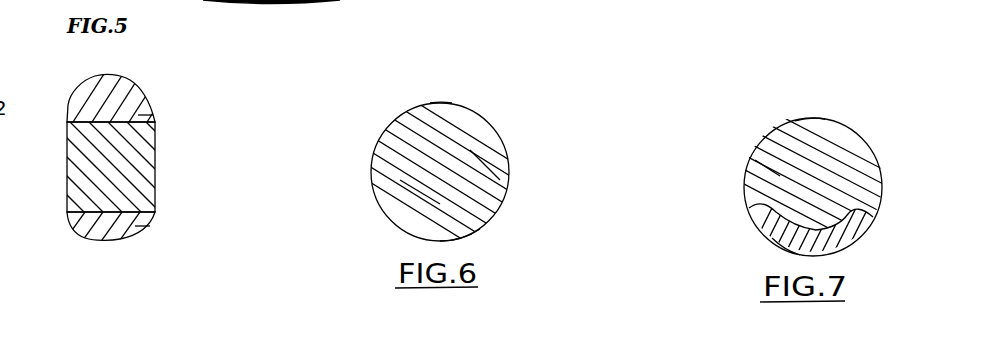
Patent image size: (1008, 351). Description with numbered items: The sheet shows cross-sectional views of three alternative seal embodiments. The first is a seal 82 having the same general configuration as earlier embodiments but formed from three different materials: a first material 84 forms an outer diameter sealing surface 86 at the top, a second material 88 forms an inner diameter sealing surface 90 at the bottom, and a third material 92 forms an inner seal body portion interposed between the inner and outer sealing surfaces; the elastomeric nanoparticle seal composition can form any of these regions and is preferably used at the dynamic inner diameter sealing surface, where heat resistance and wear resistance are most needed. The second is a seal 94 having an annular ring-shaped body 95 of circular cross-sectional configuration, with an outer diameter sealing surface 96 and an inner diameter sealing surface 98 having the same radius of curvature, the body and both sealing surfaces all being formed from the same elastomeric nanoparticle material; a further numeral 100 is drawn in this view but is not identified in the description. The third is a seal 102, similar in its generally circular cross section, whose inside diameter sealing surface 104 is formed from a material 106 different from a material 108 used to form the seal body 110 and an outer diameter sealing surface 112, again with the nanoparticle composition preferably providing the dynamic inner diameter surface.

In FIG. 5, the seal 82 is at (130, 151).
In FIG. 5, the first material 84 is at (146, 113).
In FIG. 5, the outer diameter sealing surface 86 is at (137, 82).
In FIG. 5, the second material 88 is at (137, 225).
In FIG. 5, the inner diameter sealing surface 90 is at (135, 241).
In FIG. 5, the third material 92 is at (72, 143).
In FIG. 6, the seal 94 is at (440, 159).
In FIG. 6, the annular ring-shaped body 95 is at (487, 172).
In FIG. 6, the outer diameter sealing surface 96 is at (443, 105).
In FIG. 6, the inner diameter sealing surface 98 is at (463, 238).
In FIG. 6, the core 100 is at (415, 176).
In FIG. 7, the seal 102 is at (813, 165).
In FIG. 7, the inside diameter sealing surface 104 is at (853, 247).
In FIG. 7, the material 106 is at (772, 238).
In FIG. 7, the material 108 is at (768, 168).
In FIG. 7, the seal body 110 is at (860, 172).
In FIG. 7, the outer diameter sealing surface 112 is at (805, 118).